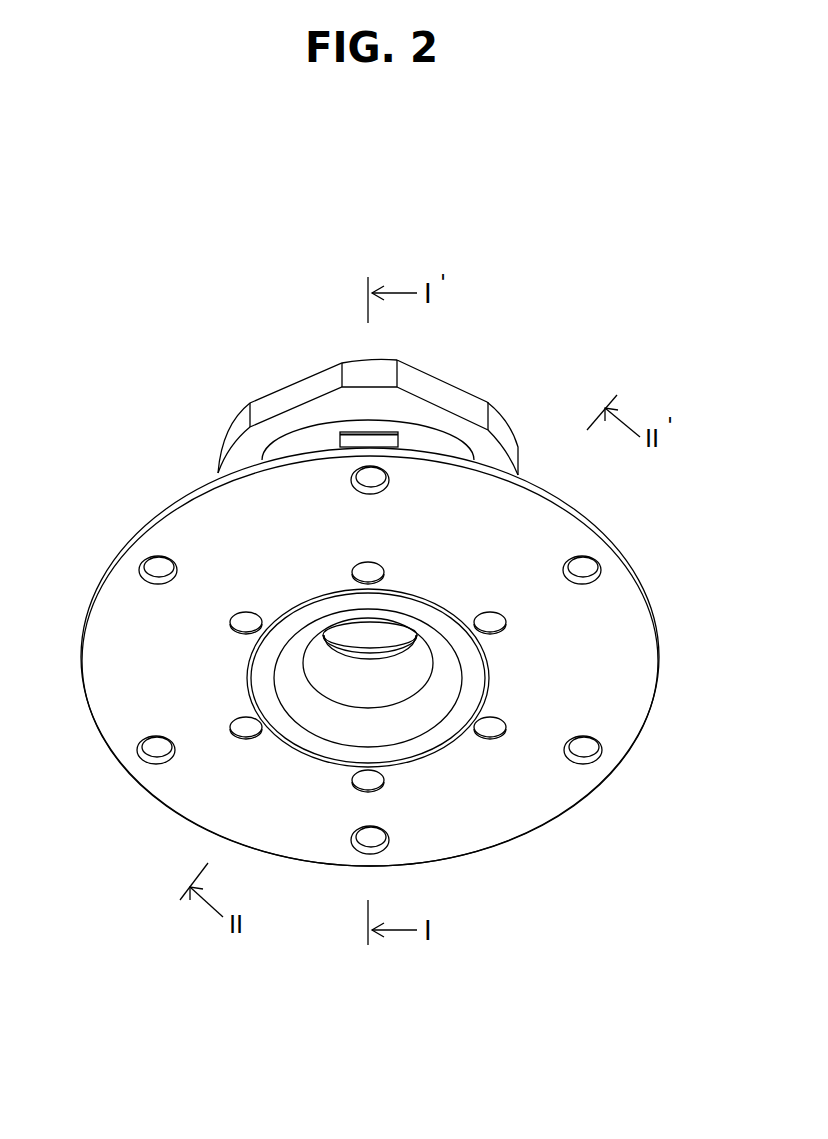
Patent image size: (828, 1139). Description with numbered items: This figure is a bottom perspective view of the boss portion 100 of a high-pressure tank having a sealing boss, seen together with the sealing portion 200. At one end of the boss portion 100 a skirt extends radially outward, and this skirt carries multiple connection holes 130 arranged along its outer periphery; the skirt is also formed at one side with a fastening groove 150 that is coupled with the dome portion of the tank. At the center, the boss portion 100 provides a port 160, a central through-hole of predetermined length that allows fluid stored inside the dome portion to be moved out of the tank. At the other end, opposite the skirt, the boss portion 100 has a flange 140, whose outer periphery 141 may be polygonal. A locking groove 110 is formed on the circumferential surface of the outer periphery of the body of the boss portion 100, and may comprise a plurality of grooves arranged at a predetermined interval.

The boss portion 100 is at (145, 803).
The locking groove 110 is at (355, 440).
The connection holes 130 is at (583, 748).
The flange 140 is at (282, 425).
The polygonal outer periphery 141 is at (452, 395).
The fastening groove 150 is at (495, 627).
The port 160 is at (392, 673).
The sealing portion 200 is at (198, 525).